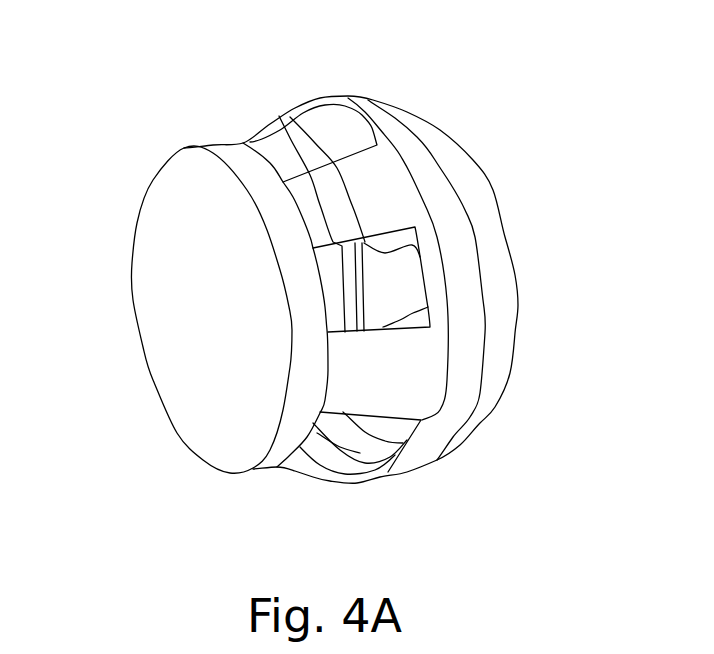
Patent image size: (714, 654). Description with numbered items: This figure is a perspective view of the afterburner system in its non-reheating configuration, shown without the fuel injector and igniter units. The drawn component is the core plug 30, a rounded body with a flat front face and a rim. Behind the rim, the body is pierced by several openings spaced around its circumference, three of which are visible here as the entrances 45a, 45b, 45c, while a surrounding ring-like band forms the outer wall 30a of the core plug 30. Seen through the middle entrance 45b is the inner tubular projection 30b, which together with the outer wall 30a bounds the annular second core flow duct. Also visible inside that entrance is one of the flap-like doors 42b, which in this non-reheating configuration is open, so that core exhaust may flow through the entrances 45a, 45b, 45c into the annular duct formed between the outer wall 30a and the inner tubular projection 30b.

The core plug 30 is at (514, 182).
The outer wall 30a is at (483, 367).
The inner tubular projection 30b is at (395, 267).
The flap-like door 42b is at (350, 270).
The entrance 45a is at (322, 118).
The entrance 45b is at (423, 322).
The entrance 45c is at (367, 448).